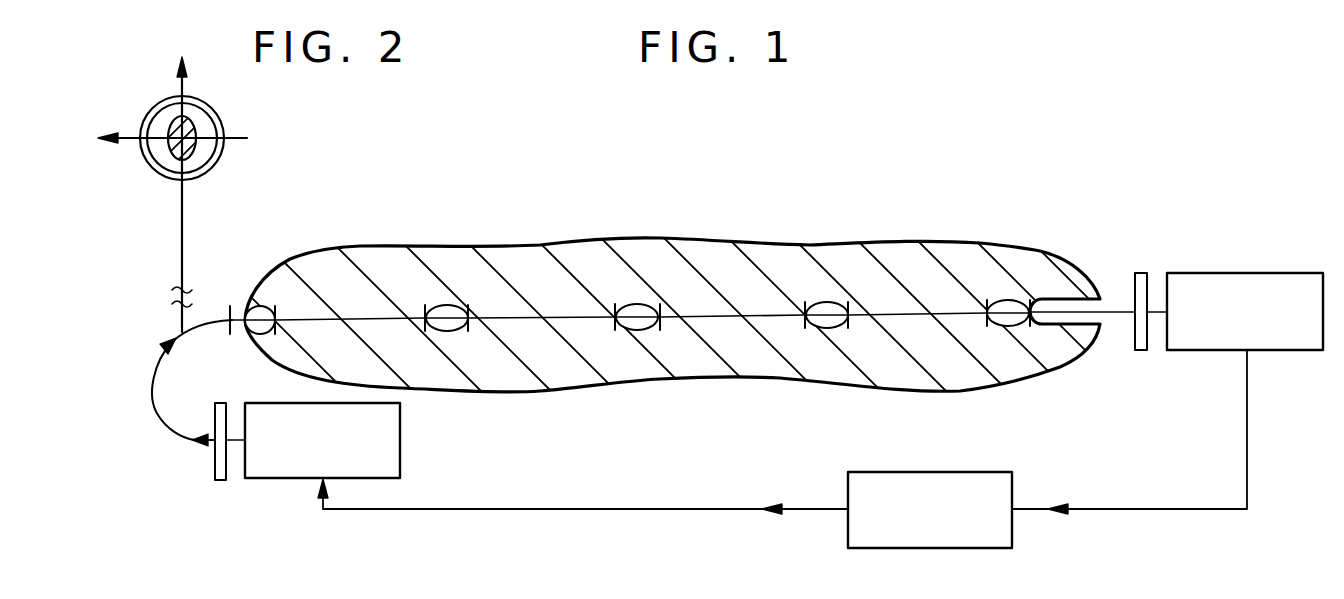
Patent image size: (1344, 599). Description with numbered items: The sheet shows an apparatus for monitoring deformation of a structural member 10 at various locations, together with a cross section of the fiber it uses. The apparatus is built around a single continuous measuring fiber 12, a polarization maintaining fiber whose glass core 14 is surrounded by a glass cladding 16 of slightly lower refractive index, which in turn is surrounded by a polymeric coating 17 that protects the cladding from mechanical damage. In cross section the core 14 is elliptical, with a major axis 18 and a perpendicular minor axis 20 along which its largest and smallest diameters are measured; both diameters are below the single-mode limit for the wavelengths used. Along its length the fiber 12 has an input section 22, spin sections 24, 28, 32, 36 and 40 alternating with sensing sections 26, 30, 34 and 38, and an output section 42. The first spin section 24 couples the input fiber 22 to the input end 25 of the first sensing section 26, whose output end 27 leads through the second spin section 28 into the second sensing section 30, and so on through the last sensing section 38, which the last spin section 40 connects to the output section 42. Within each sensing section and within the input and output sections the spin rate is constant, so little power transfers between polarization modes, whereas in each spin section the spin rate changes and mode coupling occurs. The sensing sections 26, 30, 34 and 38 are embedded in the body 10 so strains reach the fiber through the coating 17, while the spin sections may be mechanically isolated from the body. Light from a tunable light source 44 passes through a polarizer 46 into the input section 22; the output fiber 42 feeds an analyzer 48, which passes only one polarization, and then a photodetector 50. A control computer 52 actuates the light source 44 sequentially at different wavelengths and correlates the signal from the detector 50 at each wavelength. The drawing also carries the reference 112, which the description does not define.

In FIG. 1, the structural member 10 is at (632, 245).
In FIG. 1, the measuring fiber 12 is at (140, 423).
In FIG. 1, the optical fiber 112 is at (192, 405).
In FIG. 2, the core 14 is at (176, 158).
In FIG. 2, the cladding 16 is at (202, 157).
In FIG. 2, the coating 17 is at (218, 117).
In FIG. 2, the major axis 18 is at (182, 238).
In FIG. 2, the minor axis 20 is at (130, 138).
In FIG. 1, the input section 22 is at (147, 380).
In FIG. 1, the first spin section 24 is at (246, 317).
In FIG. 1, the input end of sensing section 25 is at (281, 318).
In FIG. 1, the first sensing section 26 is at (347, 318).
In FIG. 1, the output end of sensing section 27 is at (425, 318).
In FIG. 1, the second spin section 28 is at (455, 305).
In FIG. 1, the second sensing section 30 is at (558, 317).
In FIG. 1, the spin section 32 is at (640, 306).
In FIG. 1, the sensing section 34 is at (760, 316).
In FIG. 1, the spin section 36 is at (825, 306).
In FIG. 1, the last sensing section 38 is at (905, 313).
In FIG. 1, the last spin section 40 is at (1008, 307).
In FIG. 1, the output section 42 is at (1106, 303).
In FIG. 1, the light source 44 is at (400, 450).
In FIG. 1, the polarizer 46 is at (220, 480).
In FIG. 1, the analyzer 48 is at (1141, 273).
In FIG. 1, the photodetector 50 is at (1247, 273).
In FIG. 1, the control computer 52 is at (915, 472).